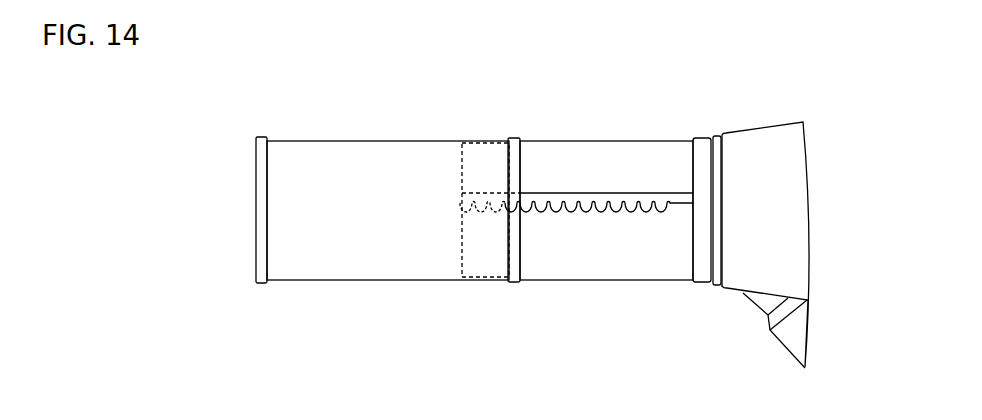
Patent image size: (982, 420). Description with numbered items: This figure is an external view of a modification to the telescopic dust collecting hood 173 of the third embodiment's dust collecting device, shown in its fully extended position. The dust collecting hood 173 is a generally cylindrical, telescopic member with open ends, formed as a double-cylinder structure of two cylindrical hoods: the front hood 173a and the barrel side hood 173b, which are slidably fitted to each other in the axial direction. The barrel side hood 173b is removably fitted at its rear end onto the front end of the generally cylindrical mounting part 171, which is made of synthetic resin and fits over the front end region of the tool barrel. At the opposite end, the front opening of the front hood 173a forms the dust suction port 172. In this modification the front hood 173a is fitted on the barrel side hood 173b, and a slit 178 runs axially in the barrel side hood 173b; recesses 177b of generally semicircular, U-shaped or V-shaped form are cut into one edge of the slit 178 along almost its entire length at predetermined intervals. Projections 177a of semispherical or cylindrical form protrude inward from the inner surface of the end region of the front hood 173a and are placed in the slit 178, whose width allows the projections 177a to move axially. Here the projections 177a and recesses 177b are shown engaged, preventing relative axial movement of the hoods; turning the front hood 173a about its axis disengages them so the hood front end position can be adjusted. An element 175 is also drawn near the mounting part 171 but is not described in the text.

The cylindrical mounting part 171 is at (762, 140).
The dust suction port 172 is at (256, 197).
The telescopic dust collecting hood 173 is at (494, 173).
The front hood 173a is at (327, 150).
The barrel side hood 173b is at (572, 152).
The projection 175 is at (782, 340).
The projections 177a is at (503, 213).
The recesses 177b is at (645, 217).
The slit 178 is at (630, 196).